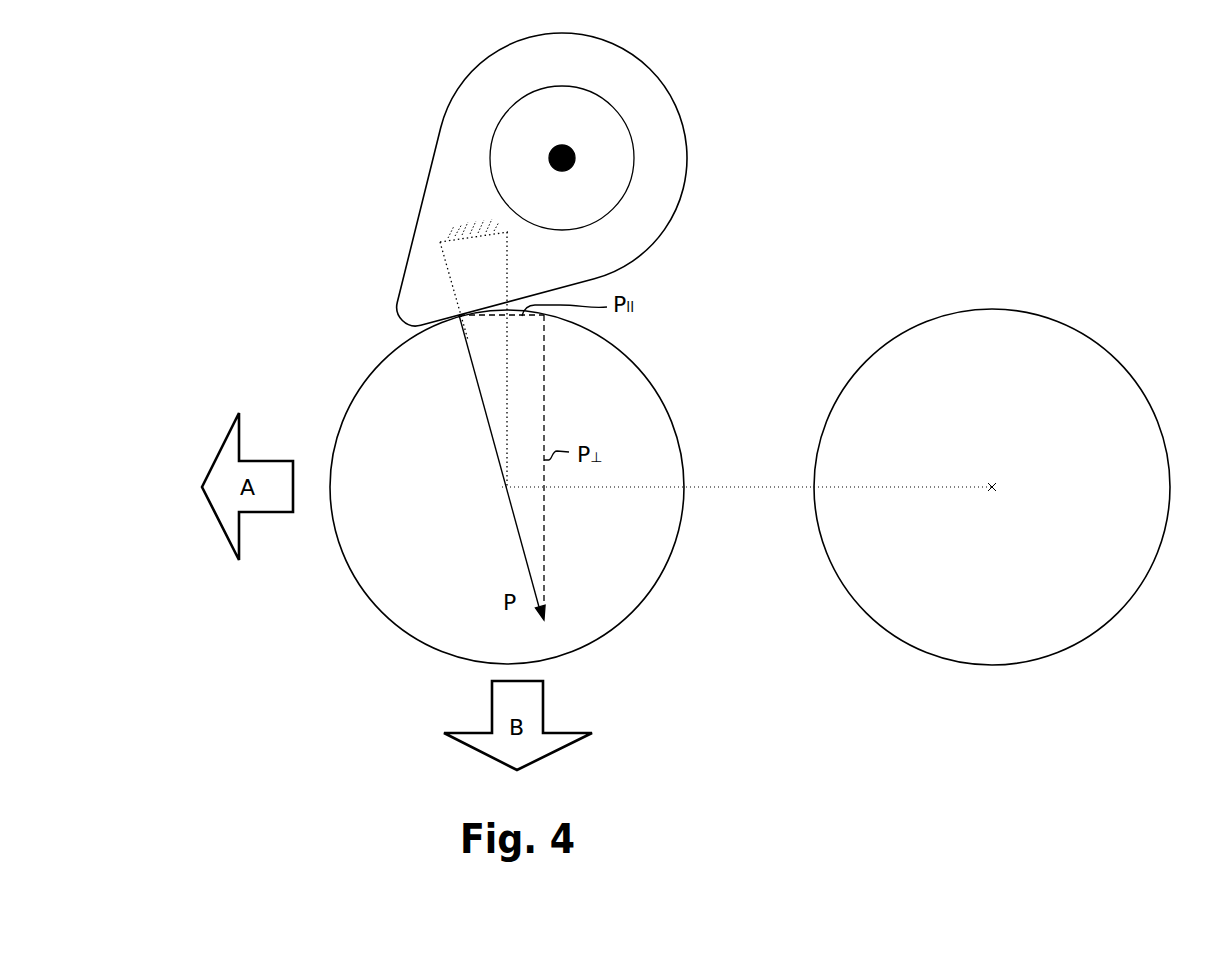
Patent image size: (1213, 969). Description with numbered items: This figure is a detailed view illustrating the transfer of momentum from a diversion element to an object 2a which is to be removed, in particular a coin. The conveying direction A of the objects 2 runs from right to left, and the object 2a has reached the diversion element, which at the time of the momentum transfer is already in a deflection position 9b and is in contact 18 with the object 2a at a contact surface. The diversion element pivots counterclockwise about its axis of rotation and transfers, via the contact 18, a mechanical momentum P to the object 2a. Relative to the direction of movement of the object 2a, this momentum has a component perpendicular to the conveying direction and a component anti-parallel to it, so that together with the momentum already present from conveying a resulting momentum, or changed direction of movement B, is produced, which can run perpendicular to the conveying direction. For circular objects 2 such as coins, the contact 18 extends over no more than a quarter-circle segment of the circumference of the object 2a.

The deflection position 9b is at (447, 110).
The contact 18 is at (459, 315).
The objects 2 is at (1047, 316).
The object to be removed 2a is at (353, 577).